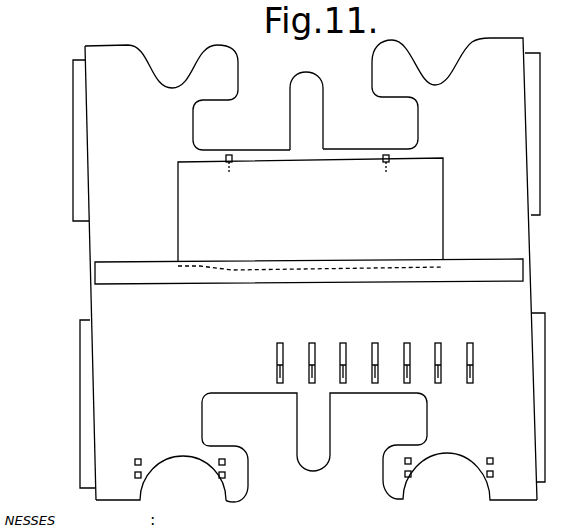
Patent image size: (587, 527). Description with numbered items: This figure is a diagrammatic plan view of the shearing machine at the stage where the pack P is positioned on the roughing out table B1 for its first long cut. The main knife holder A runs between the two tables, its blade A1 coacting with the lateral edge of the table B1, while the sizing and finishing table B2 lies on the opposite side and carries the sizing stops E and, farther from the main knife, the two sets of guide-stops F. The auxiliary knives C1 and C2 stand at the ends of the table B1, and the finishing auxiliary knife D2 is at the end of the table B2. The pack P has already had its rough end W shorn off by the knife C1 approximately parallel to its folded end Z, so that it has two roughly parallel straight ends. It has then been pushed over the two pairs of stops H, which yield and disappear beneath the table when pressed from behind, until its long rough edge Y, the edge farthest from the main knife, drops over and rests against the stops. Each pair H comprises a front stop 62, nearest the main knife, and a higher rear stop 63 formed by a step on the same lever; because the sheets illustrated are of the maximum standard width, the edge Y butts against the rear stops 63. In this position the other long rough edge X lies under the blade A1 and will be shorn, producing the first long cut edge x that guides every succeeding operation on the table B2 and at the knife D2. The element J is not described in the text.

The roughing out table B1 is at (311, 269).
The sizing and finishing table B2 is at (316, 417).
The pairs of stops H is at (305, 132).
The central tongue J is at (306, 111).
The auxiliary knife C1 is at (540, 162).
The auxiliary knife C2 is at (73, 165).
The right side rail of lower section D is at (543, 399).
The finishing auxiliary knife D2 is at (81, 400).
The pack P is at (310, 210).
The folded end of the pack Z is at (178, 210).
The rough end of the pack W is at (443, 200).
The rough long side of the pack Y is at (333, 158).
The main knife holder A is at (309, 274).
The blade A1 is at (232, 261).
The first long cut edge x is at (337, 247).
The rough long side of the pack X is at (308, 265).
The front stop 62 is at (228, 165).
The rear stop 63 is at (233, 164).
The sizing stops E is at (375, 347).
The guide-stops F is at (388, 480).